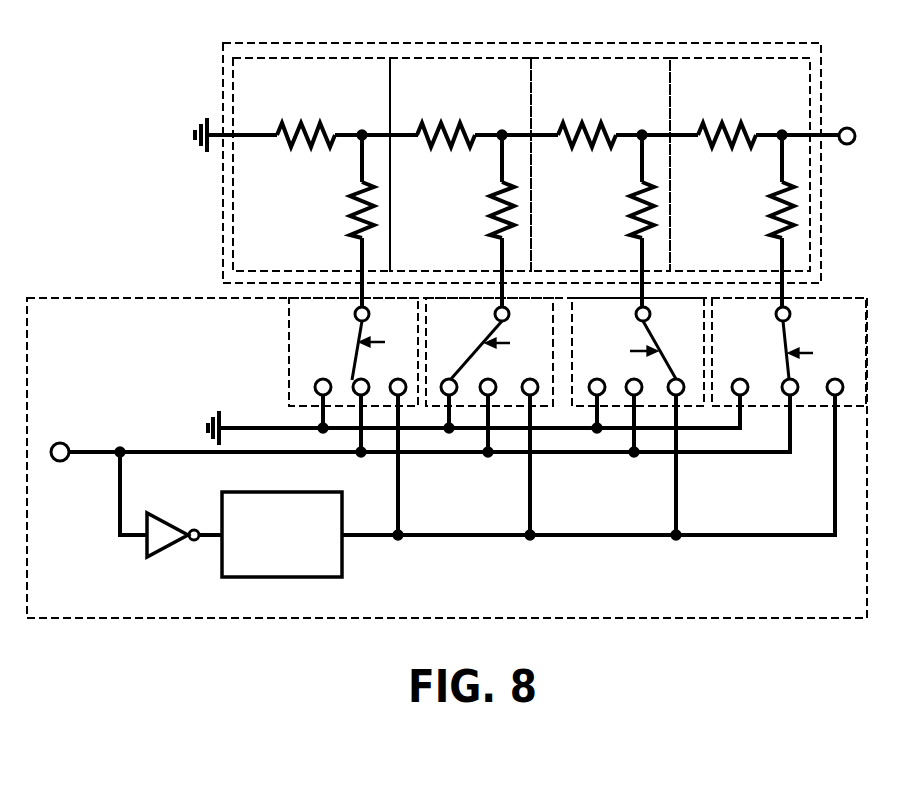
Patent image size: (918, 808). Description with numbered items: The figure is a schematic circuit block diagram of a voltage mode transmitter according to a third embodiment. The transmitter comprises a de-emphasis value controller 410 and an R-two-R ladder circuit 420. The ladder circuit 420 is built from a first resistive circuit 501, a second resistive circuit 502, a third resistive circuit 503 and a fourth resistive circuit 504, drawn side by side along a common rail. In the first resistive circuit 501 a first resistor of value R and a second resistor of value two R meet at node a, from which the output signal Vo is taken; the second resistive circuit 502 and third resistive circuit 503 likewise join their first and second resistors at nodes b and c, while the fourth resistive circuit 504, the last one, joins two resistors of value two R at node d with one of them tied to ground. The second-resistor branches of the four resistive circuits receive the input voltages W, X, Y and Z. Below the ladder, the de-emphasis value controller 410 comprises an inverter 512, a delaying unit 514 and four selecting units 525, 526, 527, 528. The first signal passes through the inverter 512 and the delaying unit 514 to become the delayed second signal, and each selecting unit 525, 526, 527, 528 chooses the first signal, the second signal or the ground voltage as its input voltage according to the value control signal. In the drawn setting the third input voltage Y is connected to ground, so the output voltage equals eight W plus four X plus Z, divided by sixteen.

The R2R ladder circuit 420 is at (225, 50).
The fourth resistive circuit 504 is at (298, 93).
The third resistive circuit 503 is at (458, 87).
The second resistive circuit 502 is at (598, 88).
The first resistive circuit 501 is at (739, 93).
The de-emphasis value controller 410 is at (78, 298).
The fourth selecting unit 528 is at (338, 325).
The third selecting unit 527 is at (475, 325).
The second selecting unit 526 is at (622, 325).
The first selecting unit 525 is at (762, 325).
The inverter 512 is at (150, 554).
The delaying unit 514 is at (230, 577).